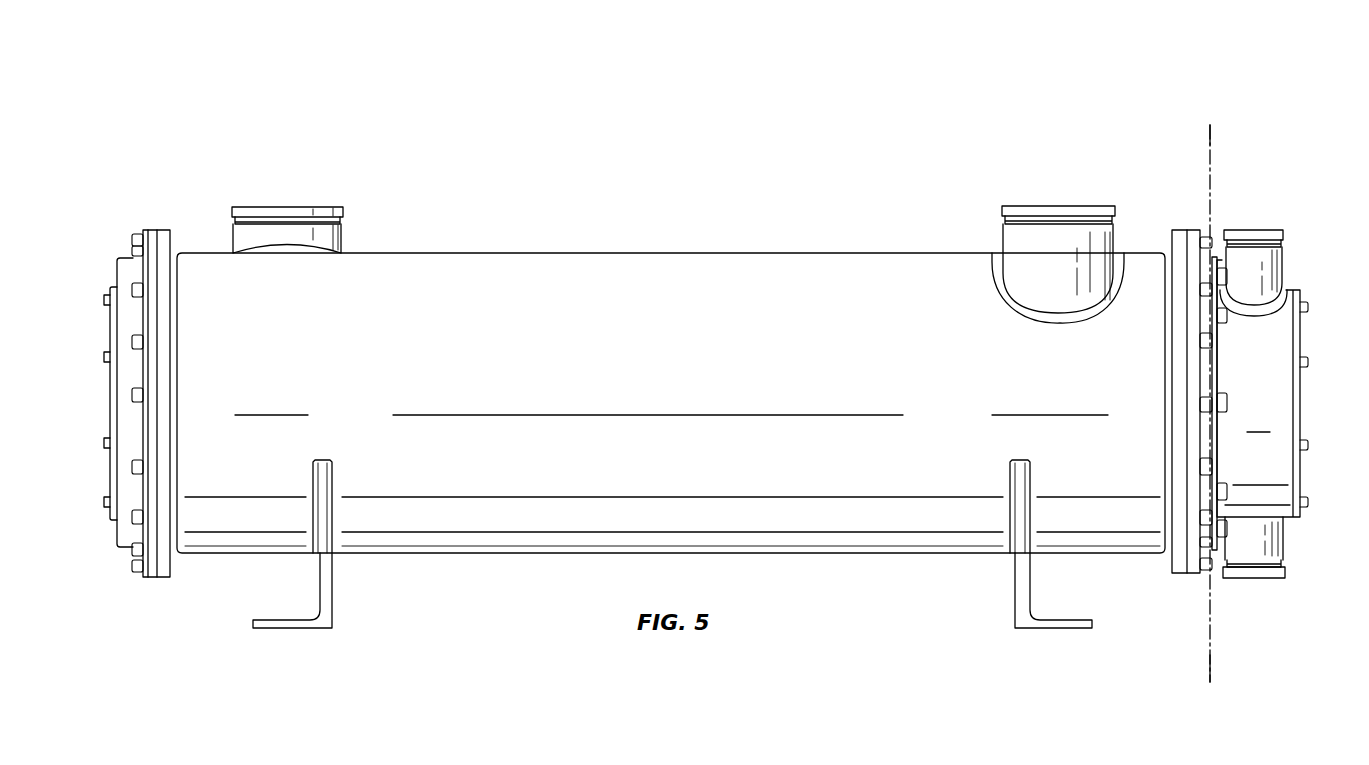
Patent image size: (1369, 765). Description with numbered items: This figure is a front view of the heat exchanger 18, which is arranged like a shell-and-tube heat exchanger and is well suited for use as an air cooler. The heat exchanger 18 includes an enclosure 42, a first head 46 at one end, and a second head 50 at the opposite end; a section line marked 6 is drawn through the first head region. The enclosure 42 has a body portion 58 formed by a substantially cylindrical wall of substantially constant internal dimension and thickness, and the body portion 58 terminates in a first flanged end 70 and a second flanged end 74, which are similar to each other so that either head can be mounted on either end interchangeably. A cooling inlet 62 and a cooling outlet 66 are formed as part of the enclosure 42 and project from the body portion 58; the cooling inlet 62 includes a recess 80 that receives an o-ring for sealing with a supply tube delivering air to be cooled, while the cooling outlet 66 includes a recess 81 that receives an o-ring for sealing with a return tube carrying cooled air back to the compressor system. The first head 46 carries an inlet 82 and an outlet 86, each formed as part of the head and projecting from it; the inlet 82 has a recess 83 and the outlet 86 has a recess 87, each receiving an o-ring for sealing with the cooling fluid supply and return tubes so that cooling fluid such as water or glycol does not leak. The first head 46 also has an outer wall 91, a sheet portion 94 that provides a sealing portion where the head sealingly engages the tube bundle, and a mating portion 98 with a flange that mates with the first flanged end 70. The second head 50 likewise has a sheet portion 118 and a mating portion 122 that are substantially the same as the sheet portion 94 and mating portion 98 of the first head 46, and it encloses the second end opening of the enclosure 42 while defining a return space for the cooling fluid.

The heat exchanger 18 is at (489, 113).
The enclosure 42 is at (730, 180).
The first head 46 is at (1312, 195).
The second head 50 is at (82, 245).
The body portion 58 is at (659, 323).
The cooling inlet 62 is at (1028, 205).
The cooling outlet 66 is at (320, 206).
The first flanged end 70 is at (192, 233).
The second flanged end 74 is at (1150, 212).
The recess 80 is at (1002, 220).
The recess 81 is at (342, 220).
The inlet 82 is at (1265, 580).
The recess 83 is at (1285, 563).
The outlet 86 is at (1252, 230).
The recess 87 is at (1284, 245).
The outer wall 91 is at (1300, 402).
The sheet portion 94 is at (1218, 432).
The mating portion 98 is at (1193, 570).
The sheet portion 118 is at (126, 545).
The mating portion 122 is at (148, 568).
The section line 6- 6 is at (1248, 667).